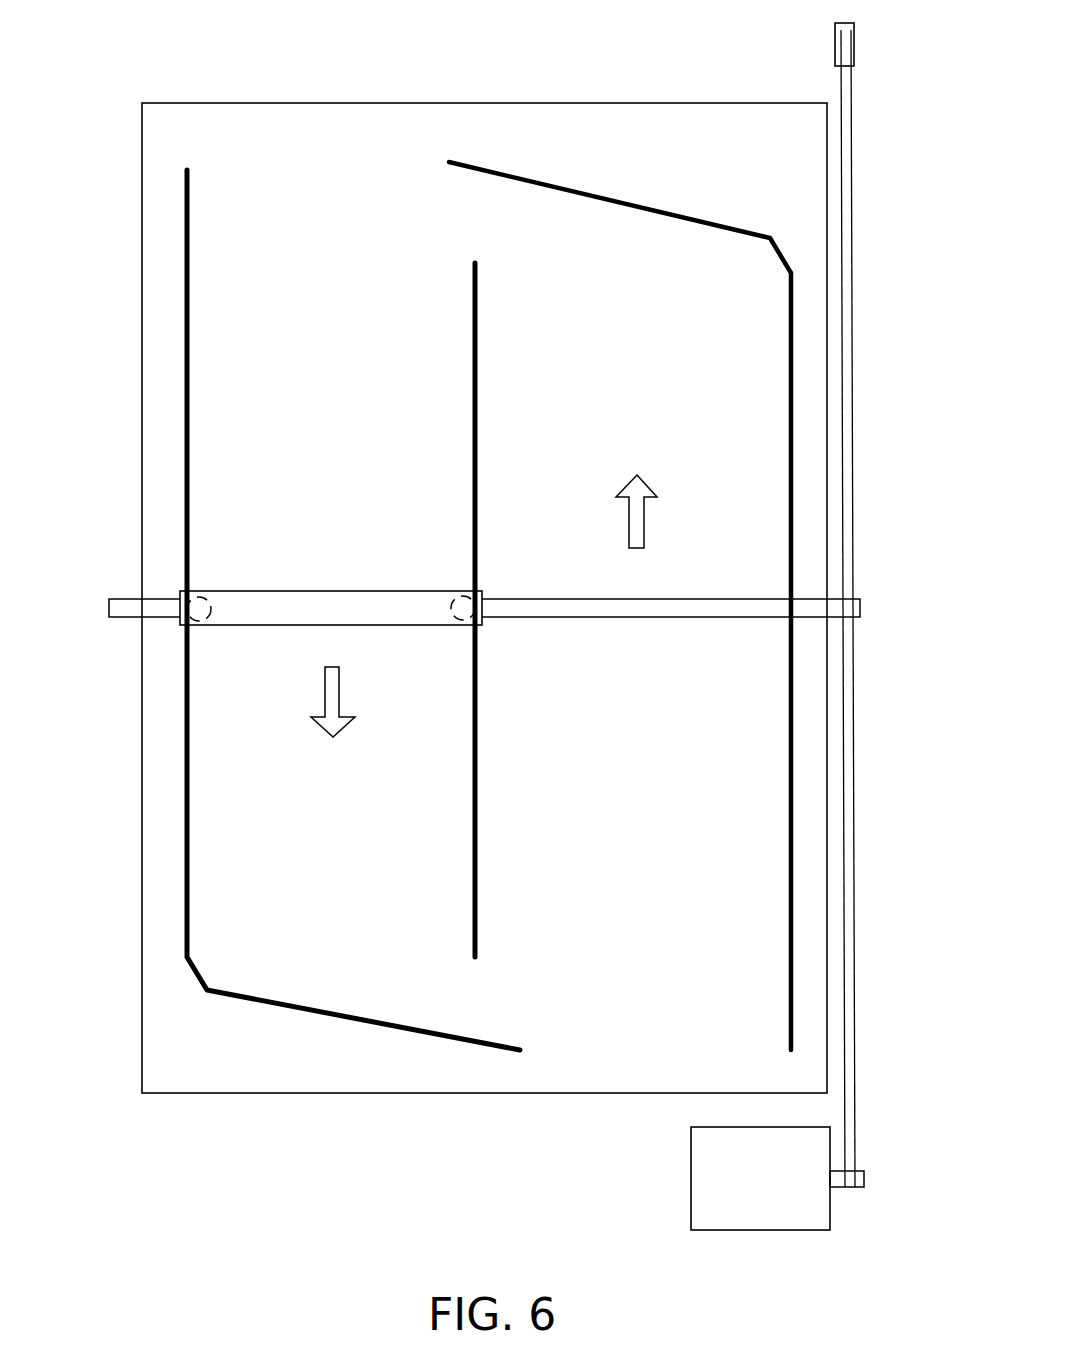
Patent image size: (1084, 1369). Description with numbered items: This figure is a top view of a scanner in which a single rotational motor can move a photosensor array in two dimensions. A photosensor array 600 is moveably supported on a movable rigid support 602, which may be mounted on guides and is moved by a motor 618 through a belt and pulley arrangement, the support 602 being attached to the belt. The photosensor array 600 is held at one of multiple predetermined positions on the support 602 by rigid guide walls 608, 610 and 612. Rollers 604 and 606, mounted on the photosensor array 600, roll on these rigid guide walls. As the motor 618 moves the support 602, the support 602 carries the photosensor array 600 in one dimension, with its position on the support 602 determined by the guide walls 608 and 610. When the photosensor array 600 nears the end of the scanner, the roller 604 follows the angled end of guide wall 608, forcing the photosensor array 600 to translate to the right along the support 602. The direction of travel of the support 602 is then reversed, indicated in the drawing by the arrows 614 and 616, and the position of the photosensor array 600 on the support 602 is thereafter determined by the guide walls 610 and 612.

The photosensor array 600 is at (332, 591).
The movable rigid support 602 is at (687, 599).
The roller 604 is at (197, 594).
The roller 606 is at (465, 622).
The rigid guide wall 608 is at (189, 383).
The rigid guide wall 610 is at (477, 375).
The rigid guide wall 612 is at (790, 385).
The downward motion arrow 614 is at (326, 695).
The upward motion arrow 616 is at (645, 530).
The motor 618 is at (741, 1190).